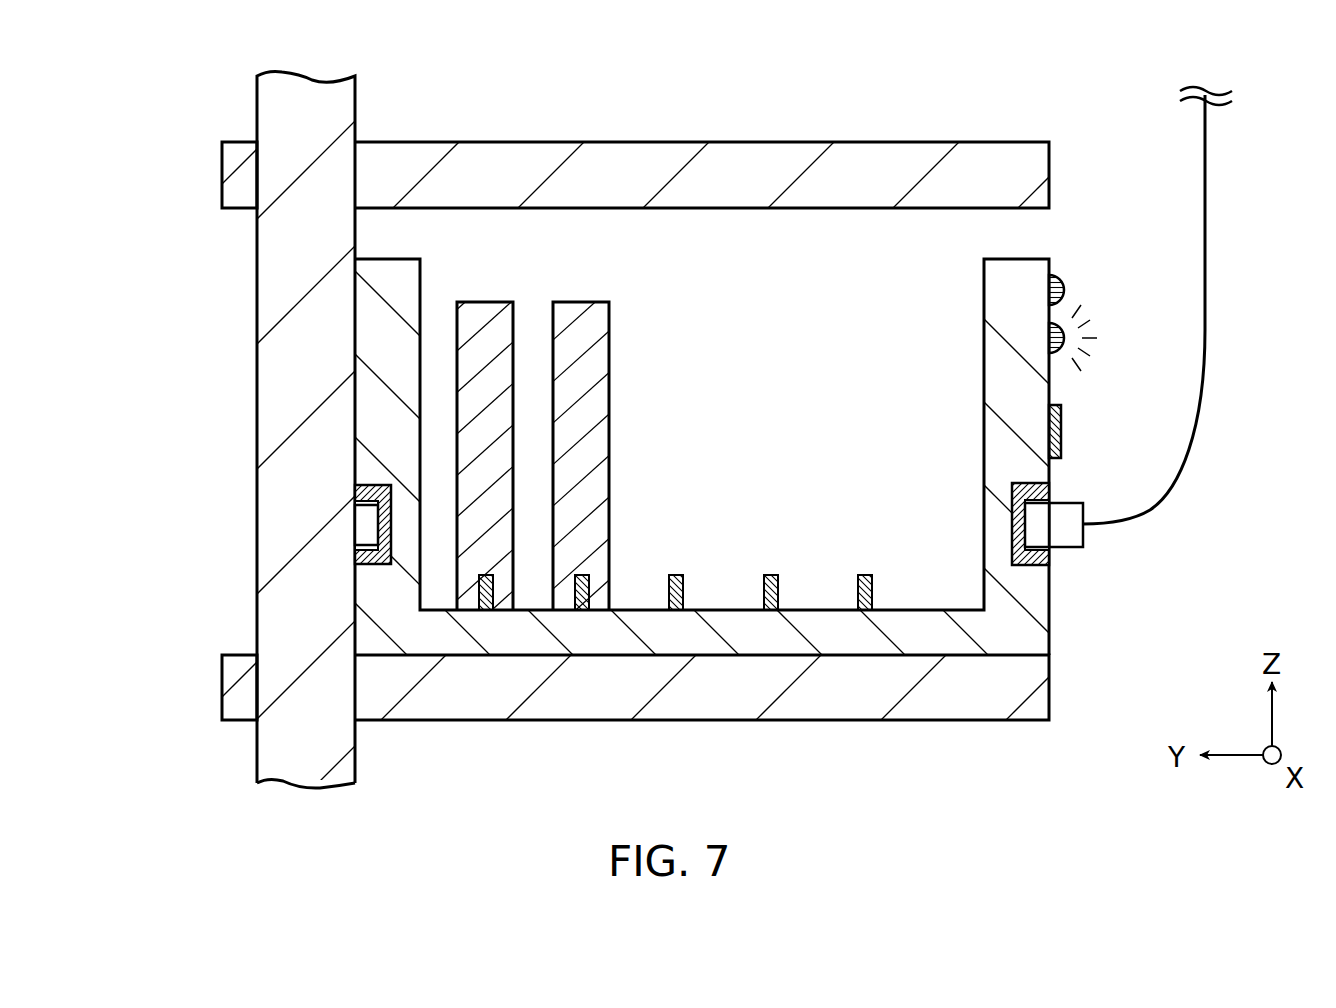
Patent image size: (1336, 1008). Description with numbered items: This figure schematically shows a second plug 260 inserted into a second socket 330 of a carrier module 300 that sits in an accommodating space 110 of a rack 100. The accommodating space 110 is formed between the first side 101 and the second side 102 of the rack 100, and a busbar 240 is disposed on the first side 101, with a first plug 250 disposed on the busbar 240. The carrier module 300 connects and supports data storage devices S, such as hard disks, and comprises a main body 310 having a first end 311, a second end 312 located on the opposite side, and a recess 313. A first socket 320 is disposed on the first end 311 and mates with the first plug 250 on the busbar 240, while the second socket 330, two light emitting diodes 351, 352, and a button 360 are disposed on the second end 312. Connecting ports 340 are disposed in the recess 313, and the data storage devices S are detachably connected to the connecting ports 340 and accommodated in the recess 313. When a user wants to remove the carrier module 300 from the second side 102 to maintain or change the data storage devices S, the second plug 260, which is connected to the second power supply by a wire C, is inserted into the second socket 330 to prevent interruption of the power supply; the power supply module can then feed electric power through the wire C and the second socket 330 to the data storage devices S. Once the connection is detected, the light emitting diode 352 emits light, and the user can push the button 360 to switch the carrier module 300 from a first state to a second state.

The rack 100 is at (211, 118).
The first side 101 is at (222, 690).
The second side 102 is at (1049, 683).
The accommodating space 110 is at (722, 240).
The busbar 240 is at (302, 448).
The first plug 250 is at (362, 525).
The second plug 260 is at (1085, 536).
The carrier module 300 is at (1080, 243).
The main body 310 is at (668, 504).
The first end 311 is at (353, 375).
The second end 312 is at (1049, 630).
The recess 313 is at (817, 345).
The first socket 320 is at (355, 558).
The second socket 330 is at (1049, 558).
The connecting port 340 is at (775, 573).
The light emitting diode 351 is at (1066, 290).
The light emitting diode 352 is at (1066, 338).
The button 360 is at (1063, 432).
The data storage device S is at (582, 320).
The wire C is at (1205, 288).